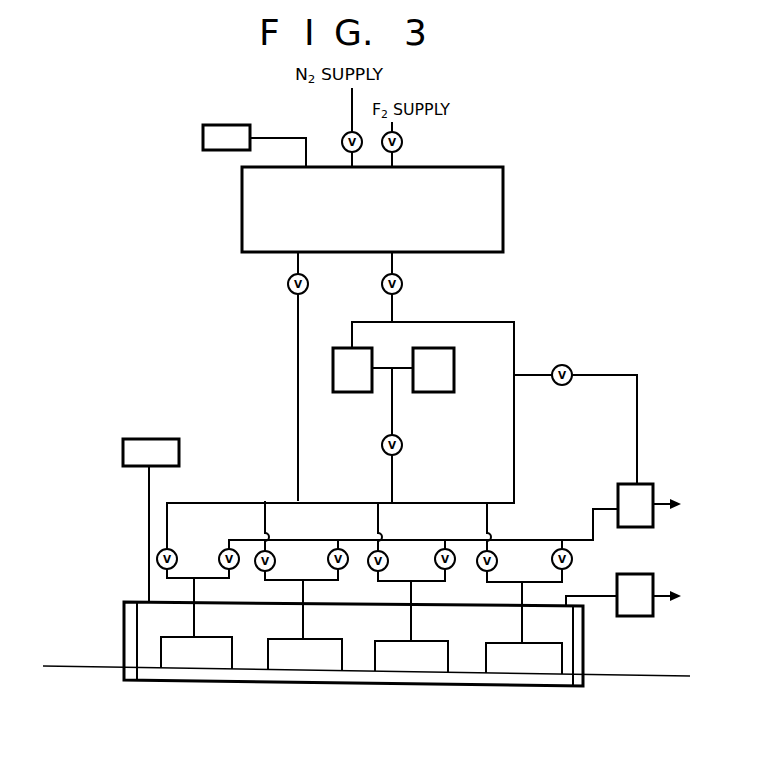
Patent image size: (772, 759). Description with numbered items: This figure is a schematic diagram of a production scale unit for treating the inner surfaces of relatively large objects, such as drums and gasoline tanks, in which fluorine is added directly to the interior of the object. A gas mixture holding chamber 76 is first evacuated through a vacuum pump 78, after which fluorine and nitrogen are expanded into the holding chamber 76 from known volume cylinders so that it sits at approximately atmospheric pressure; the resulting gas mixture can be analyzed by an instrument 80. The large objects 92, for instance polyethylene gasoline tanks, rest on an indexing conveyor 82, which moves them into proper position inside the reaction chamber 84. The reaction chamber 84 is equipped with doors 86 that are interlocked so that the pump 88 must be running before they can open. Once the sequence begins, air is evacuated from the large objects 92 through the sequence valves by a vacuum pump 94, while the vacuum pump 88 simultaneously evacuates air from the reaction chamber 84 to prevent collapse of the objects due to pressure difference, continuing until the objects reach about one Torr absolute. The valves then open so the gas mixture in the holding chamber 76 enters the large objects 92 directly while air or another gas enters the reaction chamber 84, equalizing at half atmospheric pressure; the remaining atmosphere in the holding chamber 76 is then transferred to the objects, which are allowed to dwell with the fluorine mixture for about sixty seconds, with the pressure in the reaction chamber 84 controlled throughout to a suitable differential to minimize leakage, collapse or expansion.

The gas mixture holding chamber 76 is at (475, 185).
The vacuum pump 78 is at (342, 383).
The instrument 80 is at (215, 130).
The indexing conveyor 82 is at (100, 665).
The reaction chamber 84 is at (148, 648).
The doors 86 is at (124, 614).
The vacuum pump 88 is at (635, 610).
The large objects 92 is at (180, 658).
The vacuum pump 94 is at (655, 517).